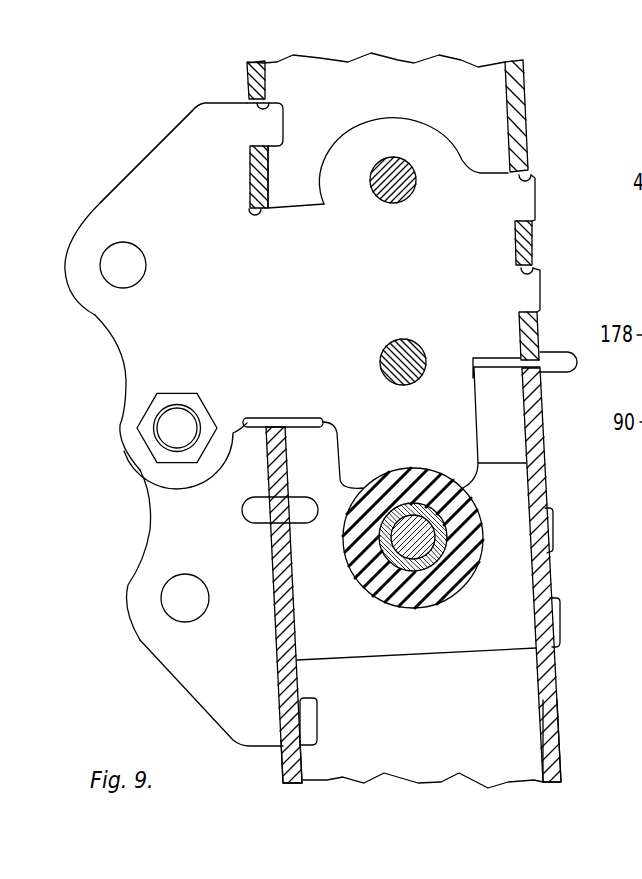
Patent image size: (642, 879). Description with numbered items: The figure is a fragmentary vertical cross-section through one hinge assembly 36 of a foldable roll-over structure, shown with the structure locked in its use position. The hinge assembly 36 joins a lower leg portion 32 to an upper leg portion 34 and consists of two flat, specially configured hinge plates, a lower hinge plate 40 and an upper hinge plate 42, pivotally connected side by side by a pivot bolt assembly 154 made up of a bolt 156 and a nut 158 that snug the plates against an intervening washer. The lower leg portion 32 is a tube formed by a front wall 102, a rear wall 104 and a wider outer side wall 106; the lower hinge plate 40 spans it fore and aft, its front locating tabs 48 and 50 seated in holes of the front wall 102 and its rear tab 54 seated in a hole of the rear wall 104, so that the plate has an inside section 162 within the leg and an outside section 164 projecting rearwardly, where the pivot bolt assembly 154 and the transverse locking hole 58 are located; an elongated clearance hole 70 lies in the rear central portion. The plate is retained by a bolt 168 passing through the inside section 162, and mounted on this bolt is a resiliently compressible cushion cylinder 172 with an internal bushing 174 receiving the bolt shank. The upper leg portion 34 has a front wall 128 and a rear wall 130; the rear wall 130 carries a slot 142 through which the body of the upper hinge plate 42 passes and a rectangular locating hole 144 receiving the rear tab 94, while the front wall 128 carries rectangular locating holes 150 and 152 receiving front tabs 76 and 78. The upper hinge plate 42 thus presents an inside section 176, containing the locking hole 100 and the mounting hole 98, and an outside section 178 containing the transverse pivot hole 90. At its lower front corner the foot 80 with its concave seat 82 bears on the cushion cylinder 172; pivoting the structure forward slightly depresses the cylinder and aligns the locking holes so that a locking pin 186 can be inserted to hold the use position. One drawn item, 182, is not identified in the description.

The lower leg portion 32 is at (568, 743).
The upper leg portion 34 is at (530, 72).
The hinge assembly 36 is at (107, 403).
The lower hinge plate 40 is at (125, 573).
The upper hinge plate 42 is at (113, 182).
The locating projection 48 is at (561, 620).
The locating projection 50 is at (554, 527).
The third forwardly extending projection 54 is at (312, 723).
The transverse locking hole 58 is at (164, 596).
The elongated clearance hole 70 is at (298, 513).
The forwardly extending projection 76 is at (542, 293).
The forwardly extending projection 78 is at (537, 203).
The foot 80 is at (360, 453).
The concave seat 82 is at (414, 480).
The transverse pivot hole 90 is at (103, 258).
The forwardly extending projection 94 is at (273, 130).
The transverse mounting hole 98 is at (401, 200).
The locking hole 100 is at (403, 340).
The front wall 102 is at (538, 477).
The rear wall 104 is at (290, 777).
The outer side wall 106 is at (438, 768).
The front wall 128 is at (517, 128).
The rear wall 130 is at (247, 76).
The slot 142 is at (257, 209).
The rectangular locating hole 144 is at (264, 101).
The rectangular locating hole 150 is at (540, 267).
The rectangular locating hole 152 is at (537, 173).
The pivot bolt assembly 154 is at (208, 402).
The bolt 156 is at (167, 433).
The nut 158 is at (162, 400).
The inside section 162 is at (383, 640).
The outside section 164 is at (197, 672).
The bolt 168 is at (468, 580).
The cushion cylinder 172 is at (364, 580).
The internal bushing 174 is at (417, 570).
The inside section 176 is at (451, 200).
The outside section 178 is at (187, 147).
The pin section 182 is at (384, 193).
The locking pin 186 is at (389, 350).